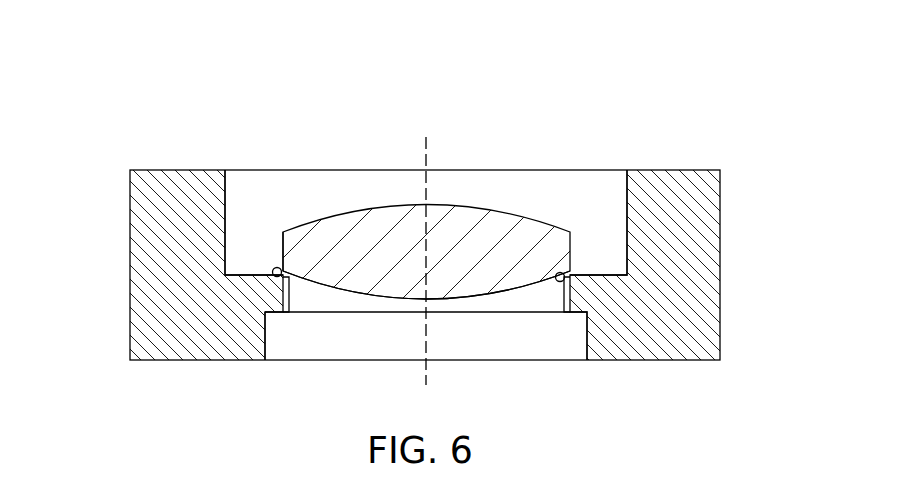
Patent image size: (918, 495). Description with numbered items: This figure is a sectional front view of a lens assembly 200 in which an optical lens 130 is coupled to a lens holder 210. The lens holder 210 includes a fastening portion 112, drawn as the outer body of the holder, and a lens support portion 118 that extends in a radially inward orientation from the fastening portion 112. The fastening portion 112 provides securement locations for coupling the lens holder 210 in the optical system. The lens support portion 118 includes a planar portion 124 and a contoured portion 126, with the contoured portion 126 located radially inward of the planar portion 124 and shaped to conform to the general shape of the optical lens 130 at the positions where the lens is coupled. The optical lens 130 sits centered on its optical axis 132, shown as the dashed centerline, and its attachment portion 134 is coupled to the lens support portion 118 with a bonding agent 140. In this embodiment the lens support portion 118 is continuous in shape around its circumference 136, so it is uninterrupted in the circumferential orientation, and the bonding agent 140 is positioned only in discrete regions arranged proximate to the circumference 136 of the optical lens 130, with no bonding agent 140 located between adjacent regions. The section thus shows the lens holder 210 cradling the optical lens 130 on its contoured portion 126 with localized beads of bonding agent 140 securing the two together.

The lens assembly 200 is at (676, 83).
The lens holder 210 is at (160, 136).
The fastening portion 112 is at (672, 169).
The lens support portion 118 is at (587, 316).
The planar portion 124 is at (605, 274).
The contoured portion 126 is at (566, 283).
The optical lens 130 is at (437, 196).
The optical axis 132 is at (424, 147).
The attachment portion 134 is at (318, 291).
The circumference 136 is at (283, 240).
The bonding agent 140 is at (280, 279).